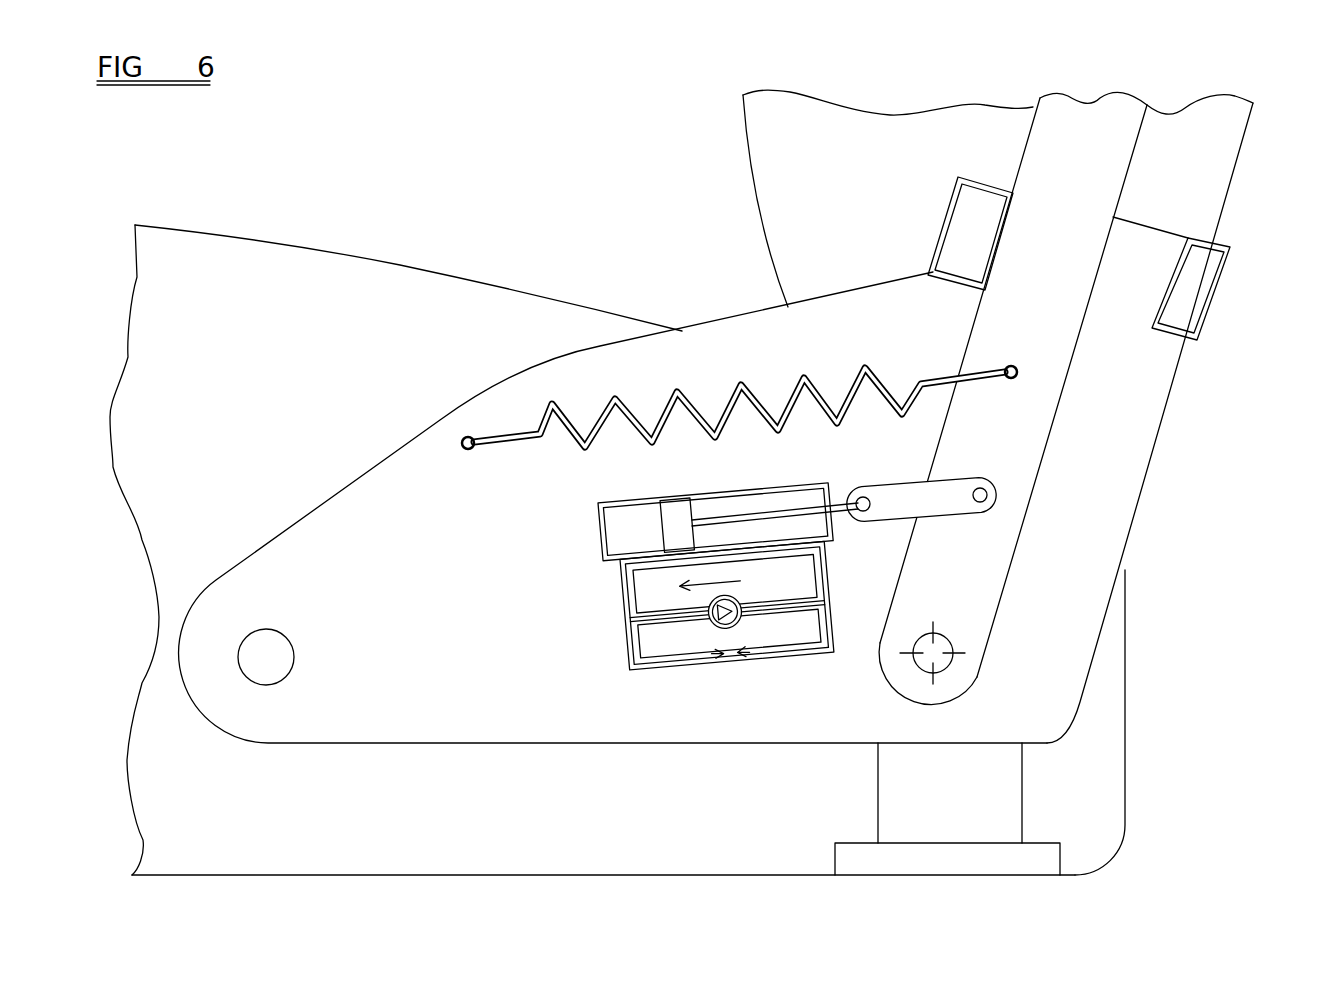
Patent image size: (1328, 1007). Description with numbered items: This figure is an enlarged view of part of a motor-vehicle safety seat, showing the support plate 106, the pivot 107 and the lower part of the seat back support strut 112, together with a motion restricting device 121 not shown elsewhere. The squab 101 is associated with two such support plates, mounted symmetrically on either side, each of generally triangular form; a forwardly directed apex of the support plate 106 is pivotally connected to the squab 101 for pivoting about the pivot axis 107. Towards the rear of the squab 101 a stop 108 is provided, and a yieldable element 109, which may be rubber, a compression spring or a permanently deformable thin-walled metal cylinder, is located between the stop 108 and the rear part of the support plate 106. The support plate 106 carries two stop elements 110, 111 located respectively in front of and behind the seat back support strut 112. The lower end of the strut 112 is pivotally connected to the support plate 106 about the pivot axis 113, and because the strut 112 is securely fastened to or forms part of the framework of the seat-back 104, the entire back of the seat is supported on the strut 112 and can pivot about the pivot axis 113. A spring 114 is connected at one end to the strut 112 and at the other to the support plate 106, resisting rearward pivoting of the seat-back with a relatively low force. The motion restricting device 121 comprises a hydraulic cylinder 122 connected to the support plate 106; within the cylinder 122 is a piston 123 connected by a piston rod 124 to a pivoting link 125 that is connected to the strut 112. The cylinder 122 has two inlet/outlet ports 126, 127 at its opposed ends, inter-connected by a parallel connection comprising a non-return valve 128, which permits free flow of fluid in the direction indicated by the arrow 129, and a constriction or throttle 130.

The squab 101 is at (343, 303).
The seat-back 104 is at (762, 190).
The support plate 106 is at (443, 677).
The pivot axis 107 is at (263, 662).
The stop 108 is at (1000, 868).
The yieldable element 109 is at (1002, 807).
The stop element 110 is at (978, 205).
The stop element 111 is at (1193, 297).
The seat back support strut 112 is at (1025, 433).
The pivot axis 113 is at (947, 640).
The spring 114 is at (738, 386).
The motion restricting device 121 is at (598, 678).
The hydraulic cylinder 122 is at (712, 497).
The piston 123 is at (673, 508).
The piston rod 124 is at (808, 490).
The pivoting link 125 is at (907, 500).
The inlet/outlet port 126 is at (612, 570).
The inlet/outlet port 127 is at (837, 550).
The non-return valve 128 is at (738, 598).
The arrow 129 is at (722, 578).
The constriction or throttle 130 is at (733, 661).